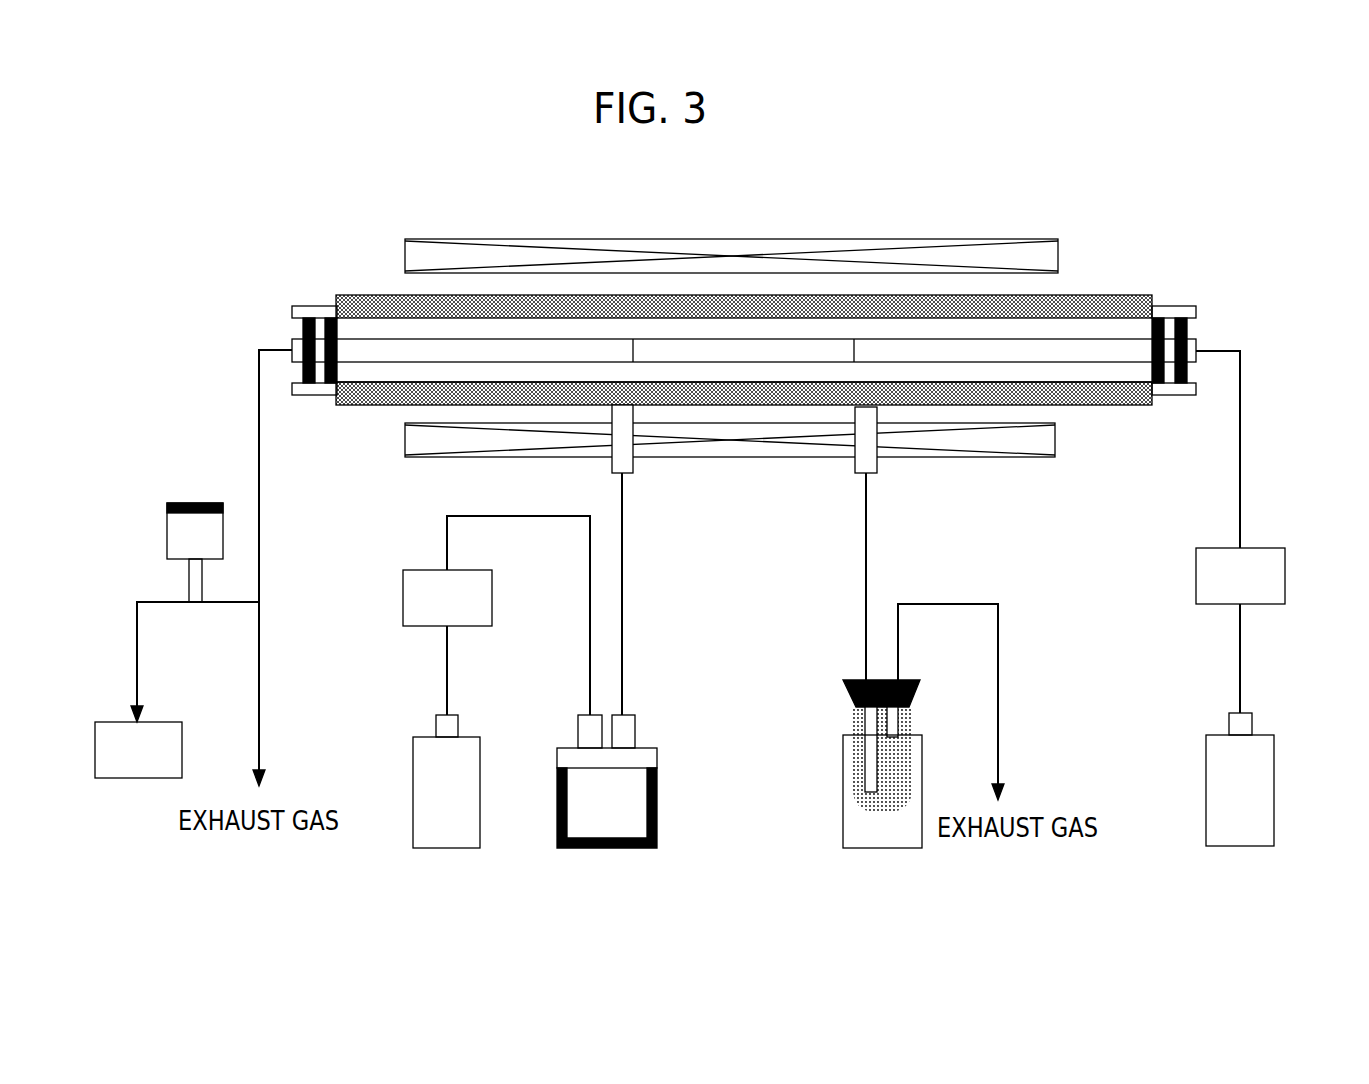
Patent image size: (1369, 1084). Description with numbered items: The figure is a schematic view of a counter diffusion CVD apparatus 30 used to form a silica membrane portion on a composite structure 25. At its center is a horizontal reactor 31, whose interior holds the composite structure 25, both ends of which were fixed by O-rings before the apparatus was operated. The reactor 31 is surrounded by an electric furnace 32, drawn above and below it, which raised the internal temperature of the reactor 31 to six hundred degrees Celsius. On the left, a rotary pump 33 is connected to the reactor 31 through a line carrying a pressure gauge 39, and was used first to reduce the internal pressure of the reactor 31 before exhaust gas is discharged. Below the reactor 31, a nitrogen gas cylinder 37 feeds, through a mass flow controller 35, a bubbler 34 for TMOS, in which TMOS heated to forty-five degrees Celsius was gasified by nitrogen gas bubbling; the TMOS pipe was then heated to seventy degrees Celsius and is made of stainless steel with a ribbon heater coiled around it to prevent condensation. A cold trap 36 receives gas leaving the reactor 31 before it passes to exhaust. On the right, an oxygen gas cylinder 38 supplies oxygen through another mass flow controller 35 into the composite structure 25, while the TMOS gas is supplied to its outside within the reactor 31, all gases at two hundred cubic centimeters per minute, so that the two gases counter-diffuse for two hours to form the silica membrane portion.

The counter diffusion CVD apparatus 30 is at (293, 245).
The reactor 31 is at (1125, 402).
The electric furnace 32 is at (1030, 258).
The composite structure 25 is at (368, 372).
The rotary pump 33 is at (140, 779).
The bubbler 34 is at (657, 810).
The mass flow controller 35 is at (492, 600).
The cold trap 36 is at (843, 752).
The nitrogen gas cylinder 37 is at (480, 748).
The oxygen gas cylinder 38 is at (1274, 775).
The pressure gauge 39 is at (192, 503).